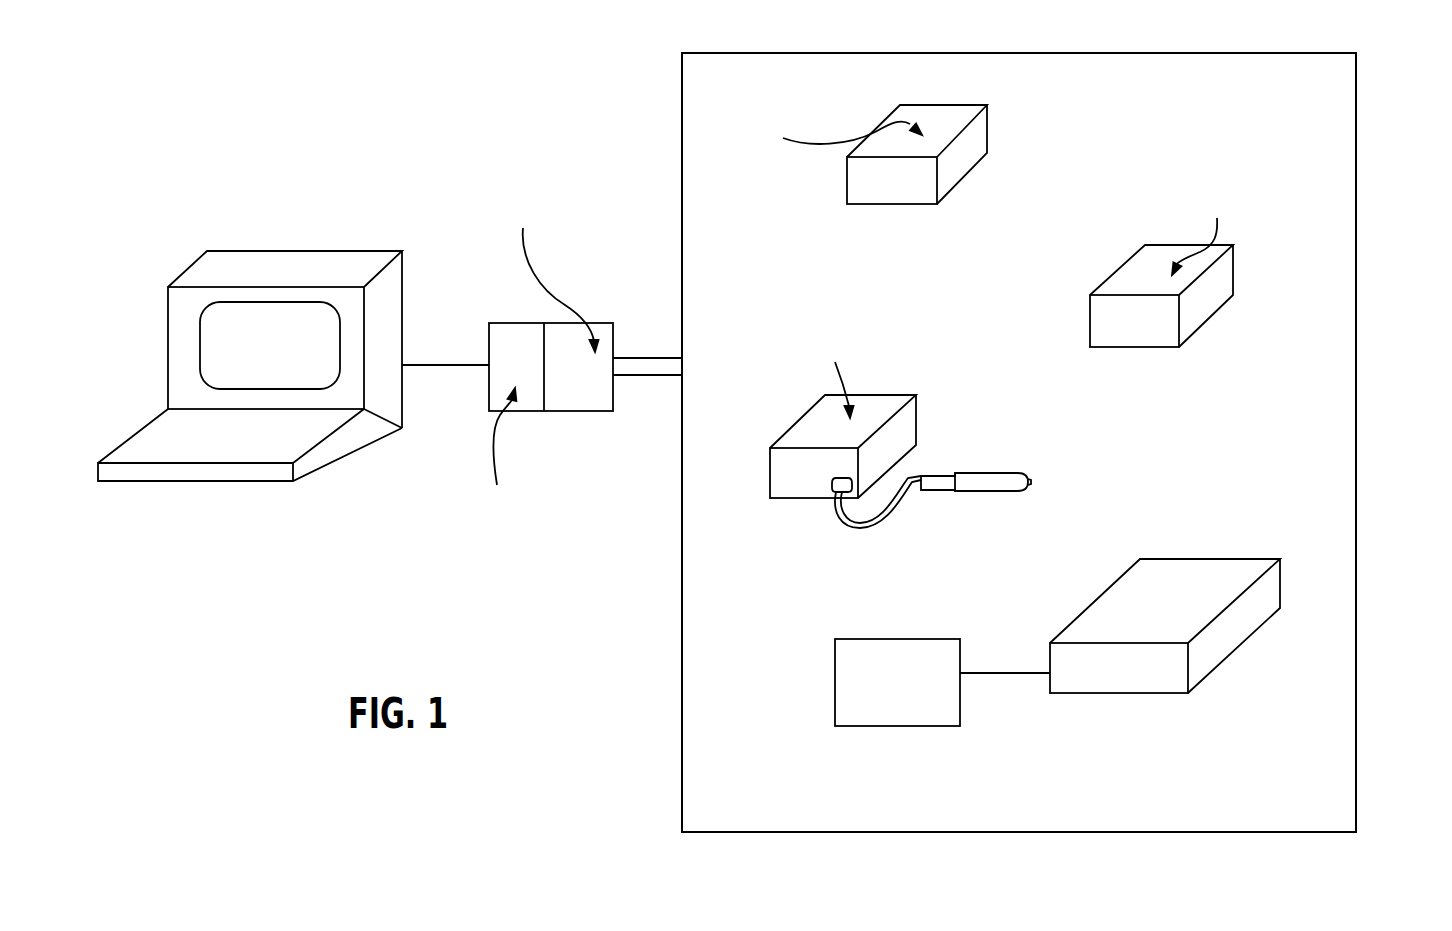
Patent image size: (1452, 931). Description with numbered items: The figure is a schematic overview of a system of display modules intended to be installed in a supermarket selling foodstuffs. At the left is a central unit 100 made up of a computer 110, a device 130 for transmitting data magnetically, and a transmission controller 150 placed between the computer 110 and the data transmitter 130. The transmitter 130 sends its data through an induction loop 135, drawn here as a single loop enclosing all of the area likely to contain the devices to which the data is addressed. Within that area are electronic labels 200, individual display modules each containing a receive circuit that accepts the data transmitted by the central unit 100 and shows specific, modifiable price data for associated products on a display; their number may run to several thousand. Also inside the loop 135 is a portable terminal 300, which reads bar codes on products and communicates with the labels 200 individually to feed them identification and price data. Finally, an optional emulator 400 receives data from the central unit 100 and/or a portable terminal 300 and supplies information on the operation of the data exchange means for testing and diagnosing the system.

The central unit 100 is at (292, 232).
The computer 110 is at (331, 448).
The device for transmitting data magnetically 130 is at (588, 395).
The transmission controller 150 is at (510, 352).
The induction loop 135 is at (1357, 298).
The electronic label 200 is at (890, 185).
The portable terminal 300 is at (798, 477).
The emulator 400 is at (1003, 705).